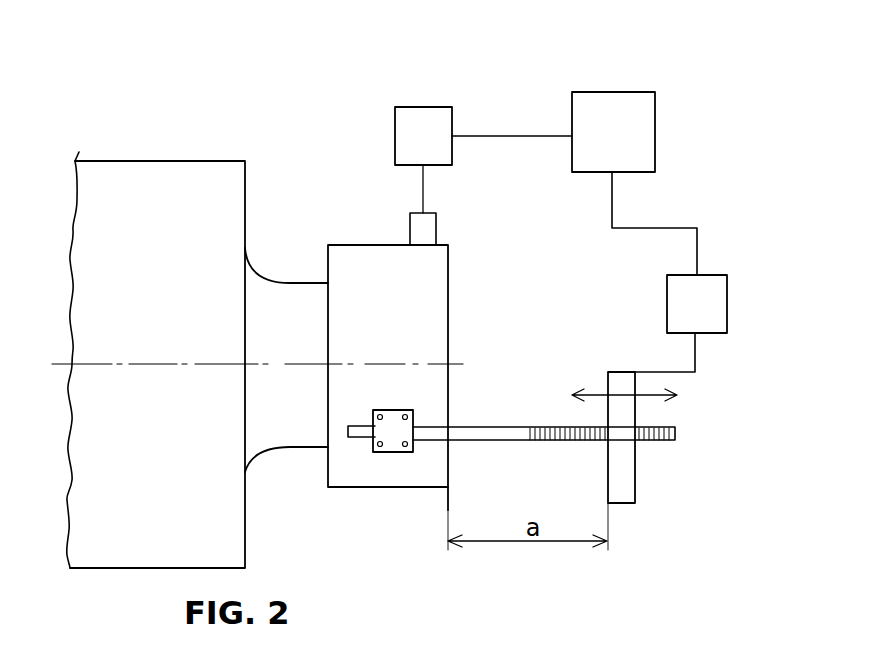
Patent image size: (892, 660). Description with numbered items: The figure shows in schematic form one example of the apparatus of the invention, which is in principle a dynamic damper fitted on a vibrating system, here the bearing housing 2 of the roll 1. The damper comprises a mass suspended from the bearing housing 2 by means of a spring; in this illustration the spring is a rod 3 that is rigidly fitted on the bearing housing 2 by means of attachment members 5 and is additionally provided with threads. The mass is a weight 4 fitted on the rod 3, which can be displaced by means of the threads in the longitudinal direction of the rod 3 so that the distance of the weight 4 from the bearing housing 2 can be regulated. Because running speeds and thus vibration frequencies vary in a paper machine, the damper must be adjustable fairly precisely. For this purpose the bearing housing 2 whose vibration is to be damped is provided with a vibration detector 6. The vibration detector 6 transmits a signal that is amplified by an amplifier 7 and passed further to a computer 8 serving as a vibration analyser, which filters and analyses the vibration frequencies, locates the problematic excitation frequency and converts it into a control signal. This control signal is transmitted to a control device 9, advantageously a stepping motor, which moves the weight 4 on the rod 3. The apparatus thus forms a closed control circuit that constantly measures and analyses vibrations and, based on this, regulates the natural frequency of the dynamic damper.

The roll 1 is at (141, 182).
The bearing housing 2 is at (350, 265).
The rod 3 is at (511, 433).
The weight 4 is at (624, 474).
The attachment members 5 is at (392, 438).
The vibration detector 6 is at (425, 228).
The amplifier 7 is at (425, 122).
The computer 8 is at (632, 106).
The control device 9 is at (706, 306).